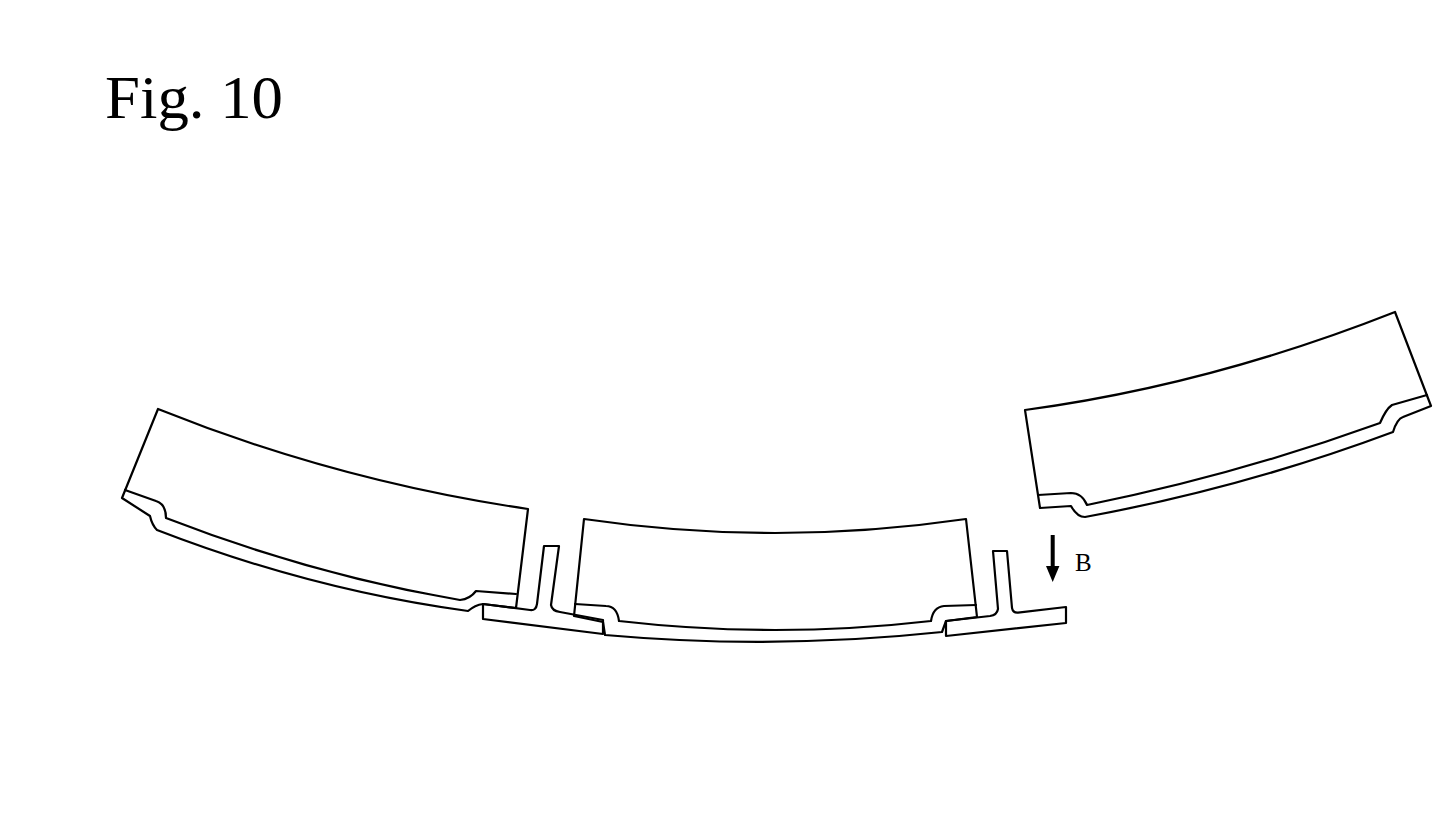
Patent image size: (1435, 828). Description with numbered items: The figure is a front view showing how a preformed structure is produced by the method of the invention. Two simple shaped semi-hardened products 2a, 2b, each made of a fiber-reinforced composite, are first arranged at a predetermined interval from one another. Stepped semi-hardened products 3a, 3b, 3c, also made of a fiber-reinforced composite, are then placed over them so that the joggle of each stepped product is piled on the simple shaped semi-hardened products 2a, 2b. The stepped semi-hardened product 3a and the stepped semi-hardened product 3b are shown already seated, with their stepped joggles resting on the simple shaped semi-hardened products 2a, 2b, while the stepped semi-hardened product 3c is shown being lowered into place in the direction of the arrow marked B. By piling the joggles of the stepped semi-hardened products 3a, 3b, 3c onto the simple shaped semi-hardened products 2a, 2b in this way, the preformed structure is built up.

The stepped semi-hardened product 3a is at (335, 514).
The stepped semi-hardened product 3b is at (770, 567).
The stepped semi-hardened product 3c is at (1203, 422).
The simple shaped semi-hardened product 2a is at (542, 617).
The simple shaped semi-hardened product 2b is at (1003, 621).